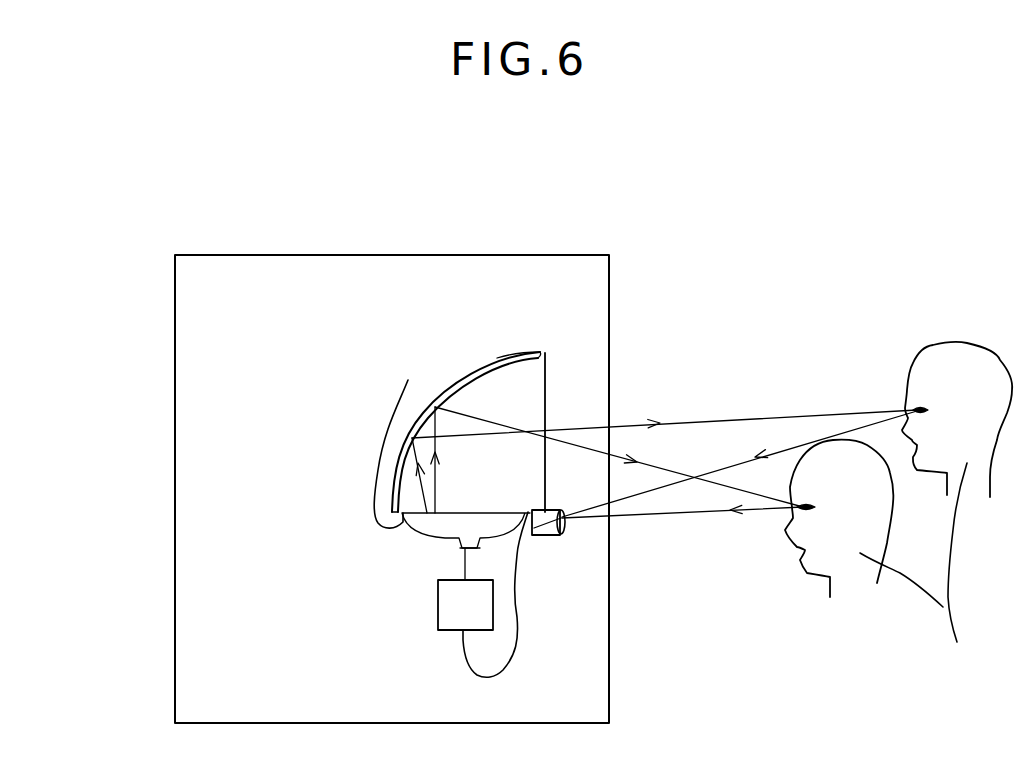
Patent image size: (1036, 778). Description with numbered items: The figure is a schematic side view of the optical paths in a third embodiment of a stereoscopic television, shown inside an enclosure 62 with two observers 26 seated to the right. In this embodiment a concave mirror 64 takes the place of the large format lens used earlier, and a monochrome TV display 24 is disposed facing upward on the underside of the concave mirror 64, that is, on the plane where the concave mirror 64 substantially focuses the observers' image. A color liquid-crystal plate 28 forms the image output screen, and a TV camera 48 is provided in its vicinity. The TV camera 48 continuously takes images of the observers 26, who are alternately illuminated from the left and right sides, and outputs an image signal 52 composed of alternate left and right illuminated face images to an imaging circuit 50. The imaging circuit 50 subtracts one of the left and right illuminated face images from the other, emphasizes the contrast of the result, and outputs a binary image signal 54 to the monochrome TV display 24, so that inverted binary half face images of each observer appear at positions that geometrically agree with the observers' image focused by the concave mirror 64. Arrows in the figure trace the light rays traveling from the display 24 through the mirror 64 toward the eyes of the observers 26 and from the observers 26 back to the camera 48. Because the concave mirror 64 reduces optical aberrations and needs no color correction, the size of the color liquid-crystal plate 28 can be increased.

The monochrome TV display 24 is at (408, 380).
The observers 26 is at (898, 510).
The color liquid-crystal plate 28 is at (545, 353).
The TV camera 48 is at (550, 536).
The imaging circuit 50 is at (438, 600).
The image signal 52 is at (463, 663).
The binary image signal 54 is at (462, 562).
The enclosure frame 62 is at (613, 243).
The concave mirror 64 is at (517, 353).